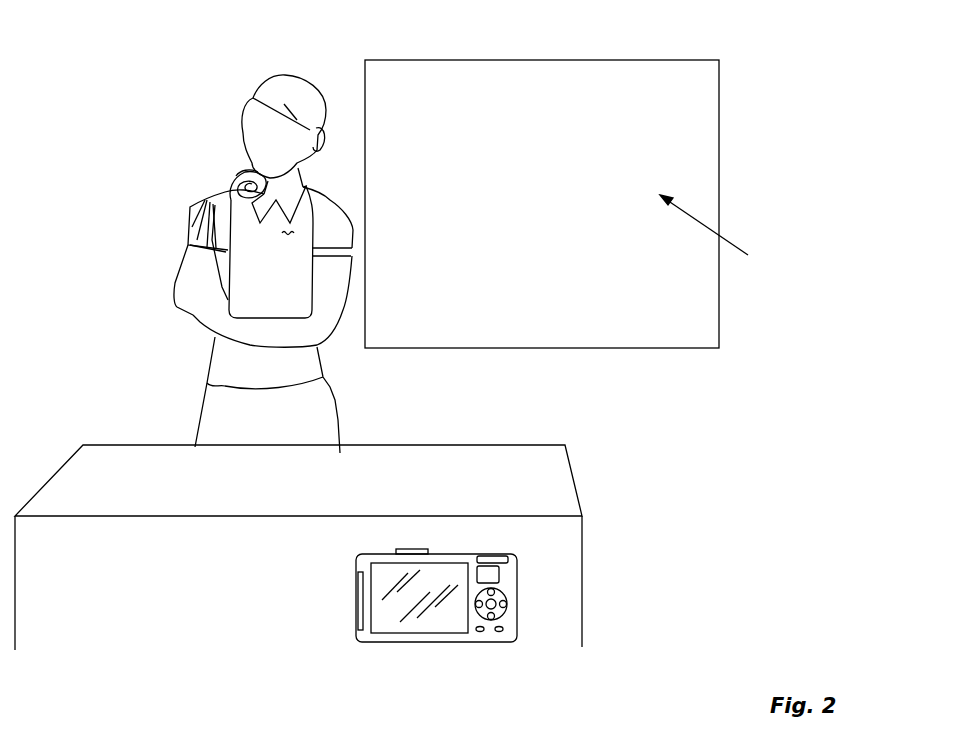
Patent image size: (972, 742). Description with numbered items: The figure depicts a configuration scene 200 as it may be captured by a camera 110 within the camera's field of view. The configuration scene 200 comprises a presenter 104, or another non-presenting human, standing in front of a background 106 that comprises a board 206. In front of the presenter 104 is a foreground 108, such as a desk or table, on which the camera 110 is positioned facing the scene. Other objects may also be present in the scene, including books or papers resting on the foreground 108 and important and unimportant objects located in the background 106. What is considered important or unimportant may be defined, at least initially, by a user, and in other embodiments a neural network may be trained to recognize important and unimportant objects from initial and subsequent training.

The configuration scene 200 is at (827, 62).
The presenter 104 is at (205, 210).
The background 106 is at (720, 192).
The board 206 is at (749, 258).
The foreground 108 is at (127, 472).
The camera 110 is at (355, 593).